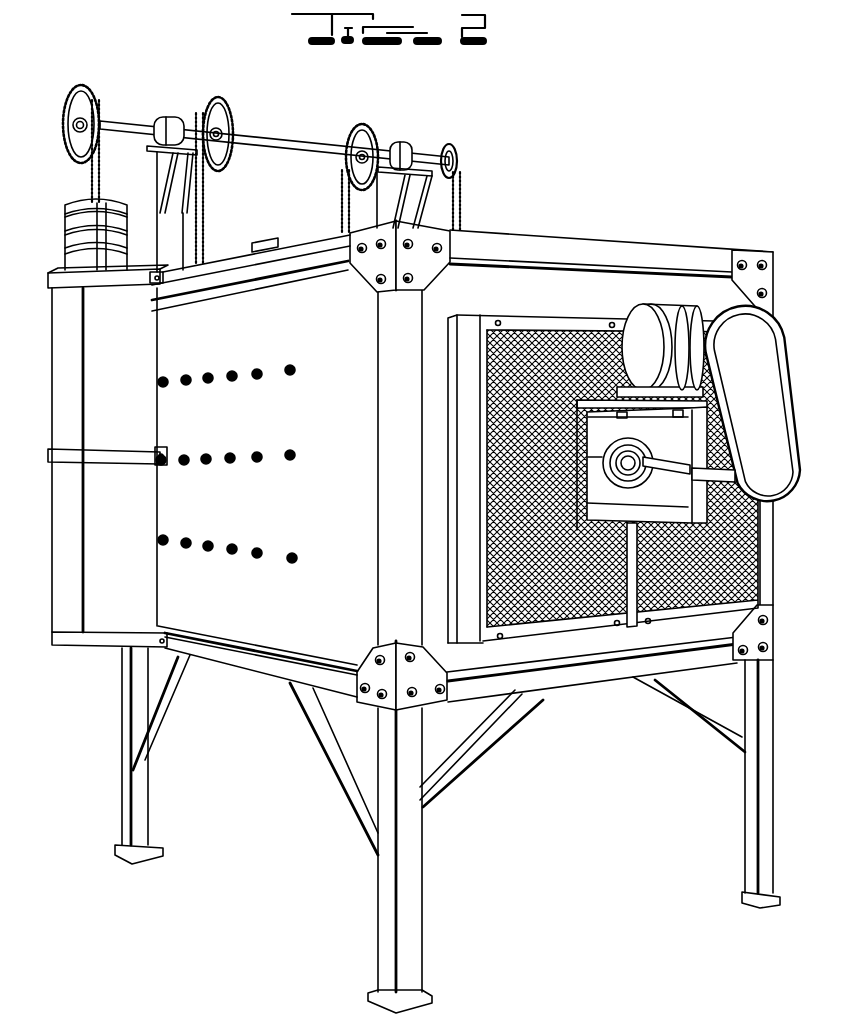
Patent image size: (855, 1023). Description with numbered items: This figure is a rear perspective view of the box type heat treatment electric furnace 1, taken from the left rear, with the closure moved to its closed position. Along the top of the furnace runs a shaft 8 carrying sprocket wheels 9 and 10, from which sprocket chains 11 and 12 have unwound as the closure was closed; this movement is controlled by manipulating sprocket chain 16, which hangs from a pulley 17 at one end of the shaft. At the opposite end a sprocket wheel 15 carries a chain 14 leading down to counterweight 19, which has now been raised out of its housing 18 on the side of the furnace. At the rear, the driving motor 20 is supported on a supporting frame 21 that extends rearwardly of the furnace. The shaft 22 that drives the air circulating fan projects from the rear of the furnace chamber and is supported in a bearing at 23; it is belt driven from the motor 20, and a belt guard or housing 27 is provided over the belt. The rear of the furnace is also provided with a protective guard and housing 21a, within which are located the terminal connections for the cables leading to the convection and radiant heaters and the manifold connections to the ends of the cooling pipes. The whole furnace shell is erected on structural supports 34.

The machine frame 1 is at (425, 617).
The shaft 8 is at (283, 141).
The sprocket wheel 9 is at (370, 142).
The sprocket wheel 10 is at (218, 120).
The sprocket chain 11 is at (345, 203).
The sprocket chain 12 is at (200, 215).
The chain 14 is at (93, 175).
The sprocket 15 is at (77, 103).
The sprocket chain 16 is at (462, 200).
The pulley 17 is at (458, 152).
The housing 18 is at (125, 378).
The counterweight 19 is at (73, 240).
The driving motor 20 is at (667, 330).
The supporting frame 21 is at (657, 405).
The protective guard and housing 21a is at (516, 346).
The shaft 22 is at (597, 457).
The bearing 23 is at (637, 475).
The belt guard or housing 27 is at (752, 403).
The structural supports 34 is at (127, 760).